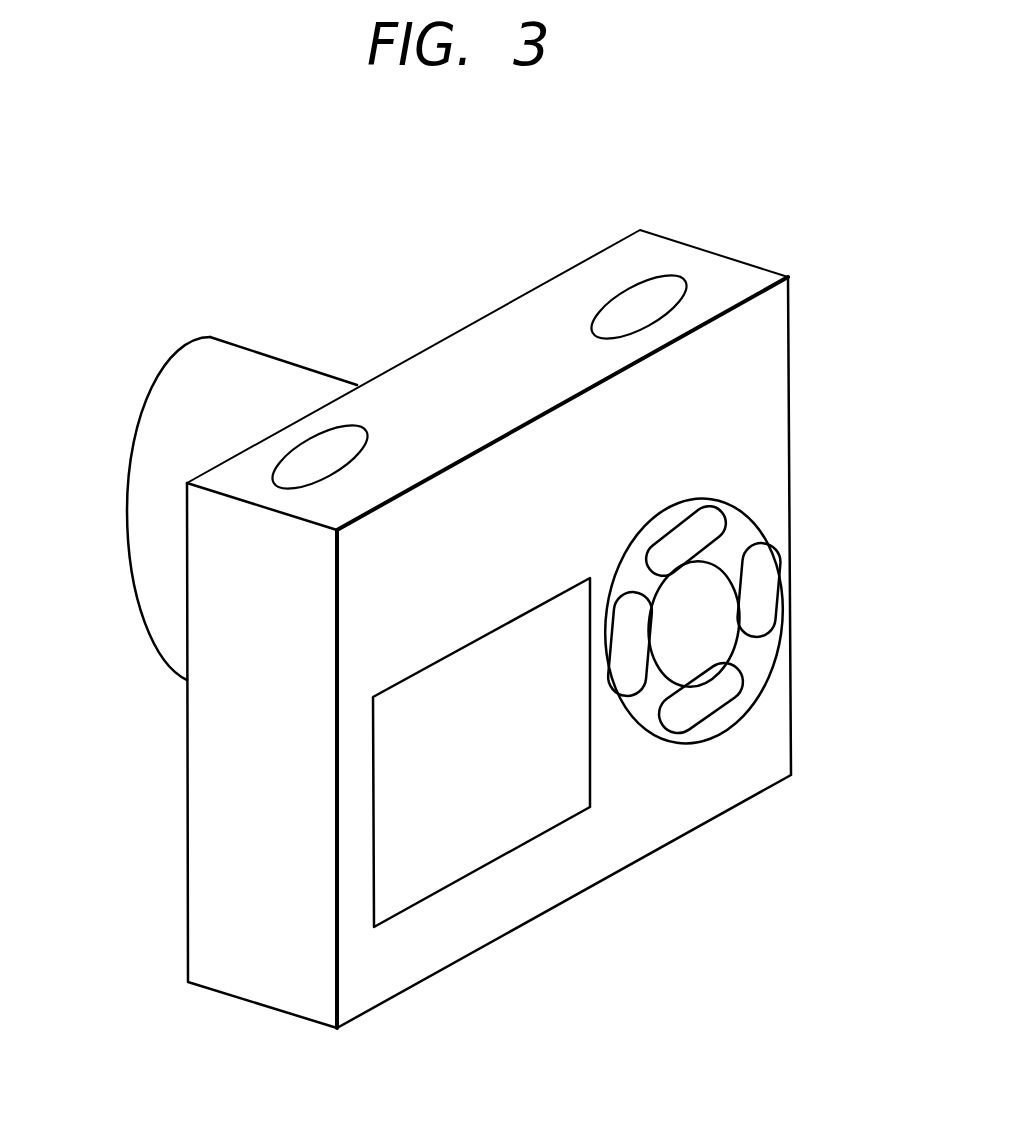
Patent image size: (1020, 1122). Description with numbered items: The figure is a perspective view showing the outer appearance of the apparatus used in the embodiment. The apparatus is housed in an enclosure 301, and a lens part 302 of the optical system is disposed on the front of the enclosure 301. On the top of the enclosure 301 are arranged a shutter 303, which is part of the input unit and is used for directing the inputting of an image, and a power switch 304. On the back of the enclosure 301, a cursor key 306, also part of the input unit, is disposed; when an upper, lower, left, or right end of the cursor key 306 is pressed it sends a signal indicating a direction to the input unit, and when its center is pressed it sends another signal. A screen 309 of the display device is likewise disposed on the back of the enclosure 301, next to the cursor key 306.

The enclosure 301 is at (672, 237).
The lens part 302 is at (237, 380).
The shutter 303 is at (665, 295).
The power switch 304 is at (303, 468).
The cursor key 306 is at (743, 532).
The screen 309 is at (490, 835).